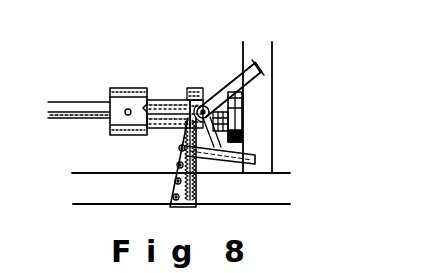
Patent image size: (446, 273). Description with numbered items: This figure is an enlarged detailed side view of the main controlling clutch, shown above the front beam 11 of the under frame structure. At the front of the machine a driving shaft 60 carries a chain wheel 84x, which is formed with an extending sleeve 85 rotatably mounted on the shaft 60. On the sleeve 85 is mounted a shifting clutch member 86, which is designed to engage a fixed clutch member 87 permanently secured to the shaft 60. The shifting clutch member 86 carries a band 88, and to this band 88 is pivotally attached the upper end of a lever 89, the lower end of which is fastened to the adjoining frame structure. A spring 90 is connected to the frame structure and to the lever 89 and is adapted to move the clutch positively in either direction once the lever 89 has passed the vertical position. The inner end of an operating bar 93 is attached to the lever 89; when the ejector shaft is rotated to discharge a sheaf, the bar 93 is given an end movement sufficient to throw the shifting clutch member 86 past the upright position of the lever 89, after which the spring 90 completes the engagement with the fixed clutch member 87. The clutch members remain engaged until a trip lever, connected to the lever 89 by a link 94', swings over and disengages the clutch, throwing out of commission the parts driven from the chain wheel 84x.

The front beam 11 is at (181, 123).
The driving shaft 60 is at (85, 118).
The fixed clutch member 87 is at (122, 135).
The extending sleeve 85 is at (172, 128).
The lever 89 is at (196, 120).
The band 88 is at (204, 105).
The operating bar 93 is at (249, 79).
The chain wheel 84x is at (242, 130).
The link 94' is at (245, 154).
The shifting clutch member 86 is at (213, 128).
The spring 90 is at (195, 172).